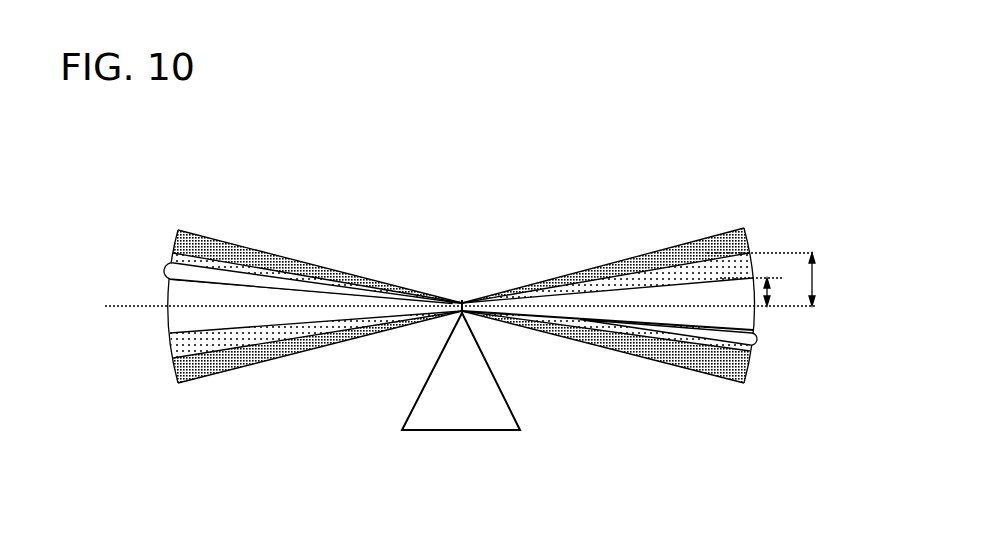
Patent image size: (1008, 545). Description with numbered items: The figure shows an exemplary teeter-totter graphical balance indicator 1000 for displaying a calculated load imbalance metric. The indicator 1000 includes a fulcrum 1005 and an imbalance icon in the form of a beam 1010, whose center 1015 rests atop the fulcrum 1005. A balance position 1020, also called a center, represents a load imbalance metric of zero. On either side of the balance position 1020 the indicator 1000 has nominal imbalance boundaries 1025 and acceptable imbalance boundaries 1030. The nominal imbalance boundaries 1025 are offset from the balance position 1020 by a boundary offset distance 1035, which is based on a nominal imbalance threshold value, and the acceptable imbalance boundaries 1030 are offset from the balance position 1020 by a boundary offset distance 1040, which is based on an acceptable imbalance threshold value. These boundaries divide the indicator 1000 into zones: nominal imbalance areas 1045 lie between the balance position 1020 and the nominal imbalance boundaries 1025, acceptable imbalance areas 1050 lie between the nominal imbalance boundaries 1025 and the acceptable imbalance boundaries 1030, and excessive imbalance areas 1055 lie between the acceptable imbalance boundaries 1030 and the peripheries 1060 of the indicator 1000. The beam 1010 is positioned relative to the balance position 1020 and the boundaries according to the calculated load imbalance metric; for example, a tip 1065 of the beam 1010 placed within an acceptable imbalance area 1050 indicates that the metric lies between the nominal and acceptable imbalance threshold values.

The teeter-totter graphical balance indicator 1000 is at (677, 138).
The fulcrum 1005 is at (425, 432).
The beam 1010 is at (477, 313).
The center 1015 is at (463, 299).
The balance position 1020 is at (124, 307).
The nominal imbalance boundaries 1025 is at (171, 277).
The acceptable imbalance boundaries 1030 is at (177, 236).
The boundary offset distance 1035 is at (771, 292).
The boundary offset distance 1040 is at (814, 290).
The nominal imbalance areas 1045 is at (176, 291).
The acceptable imbalance areas 1050 is at (178, 258).
The excessive imbalance areas 1055 is at (196, 245).
The peripheries 1060 is at (245, 248).
The tip 1065 is at (762, 347).